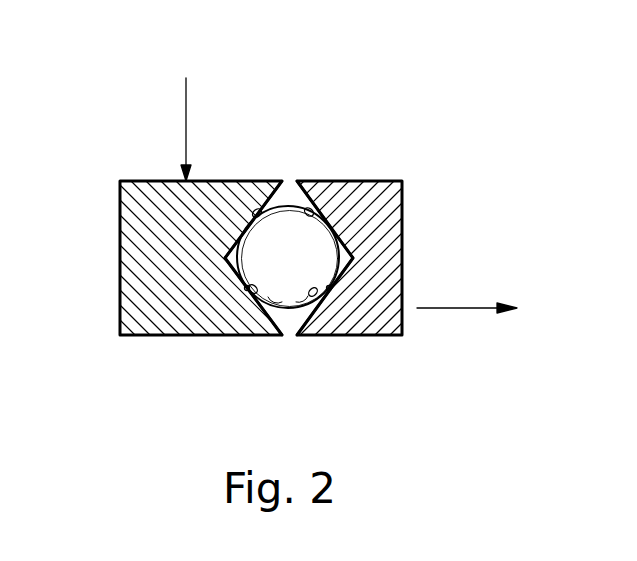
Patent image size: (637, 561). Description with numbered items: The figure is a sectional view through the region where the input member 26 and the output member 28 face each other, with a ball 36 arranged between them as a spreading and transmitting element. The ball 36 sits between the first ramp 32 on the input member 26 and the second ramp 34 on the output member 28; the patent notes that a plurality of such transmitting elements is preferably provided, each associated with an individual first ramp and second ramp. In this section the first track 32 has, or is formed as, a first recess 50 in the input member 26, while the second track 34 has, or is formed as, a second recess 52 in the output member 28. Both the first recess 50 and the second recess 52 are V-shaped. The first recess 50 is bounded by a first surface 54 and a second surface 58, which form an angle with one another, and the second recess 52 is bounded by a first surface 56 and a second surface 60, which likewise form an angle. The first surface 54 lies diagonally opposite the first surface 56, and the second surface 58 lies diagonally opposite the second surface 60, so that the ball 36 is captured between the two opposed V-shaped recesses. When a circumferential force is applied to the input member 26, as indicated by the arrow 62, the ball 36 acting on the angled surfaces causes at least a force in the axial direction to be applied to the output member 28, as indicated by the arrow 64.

The input member 26 is at (132, 232).
The output member 28 is at (383, 203).
The first ramp 32 is at (275, 177).
The second ramp 34 is at (303, 177).
The ball 36 is at (305, 265).
The first recess 50 is at (258, 208).
The second recess 52 is at (314, 208).
The first surface of the first recess 54 is at (195, 335).
The first surface of the second recess 56 is at (347, 335).
The second surface of the first recess 58 is at (232, 335).
The second surface of the second recess 60 is at (381, 336).
The arrow 62 is at (187, 88).
The arrow 64 is at (438, 310).